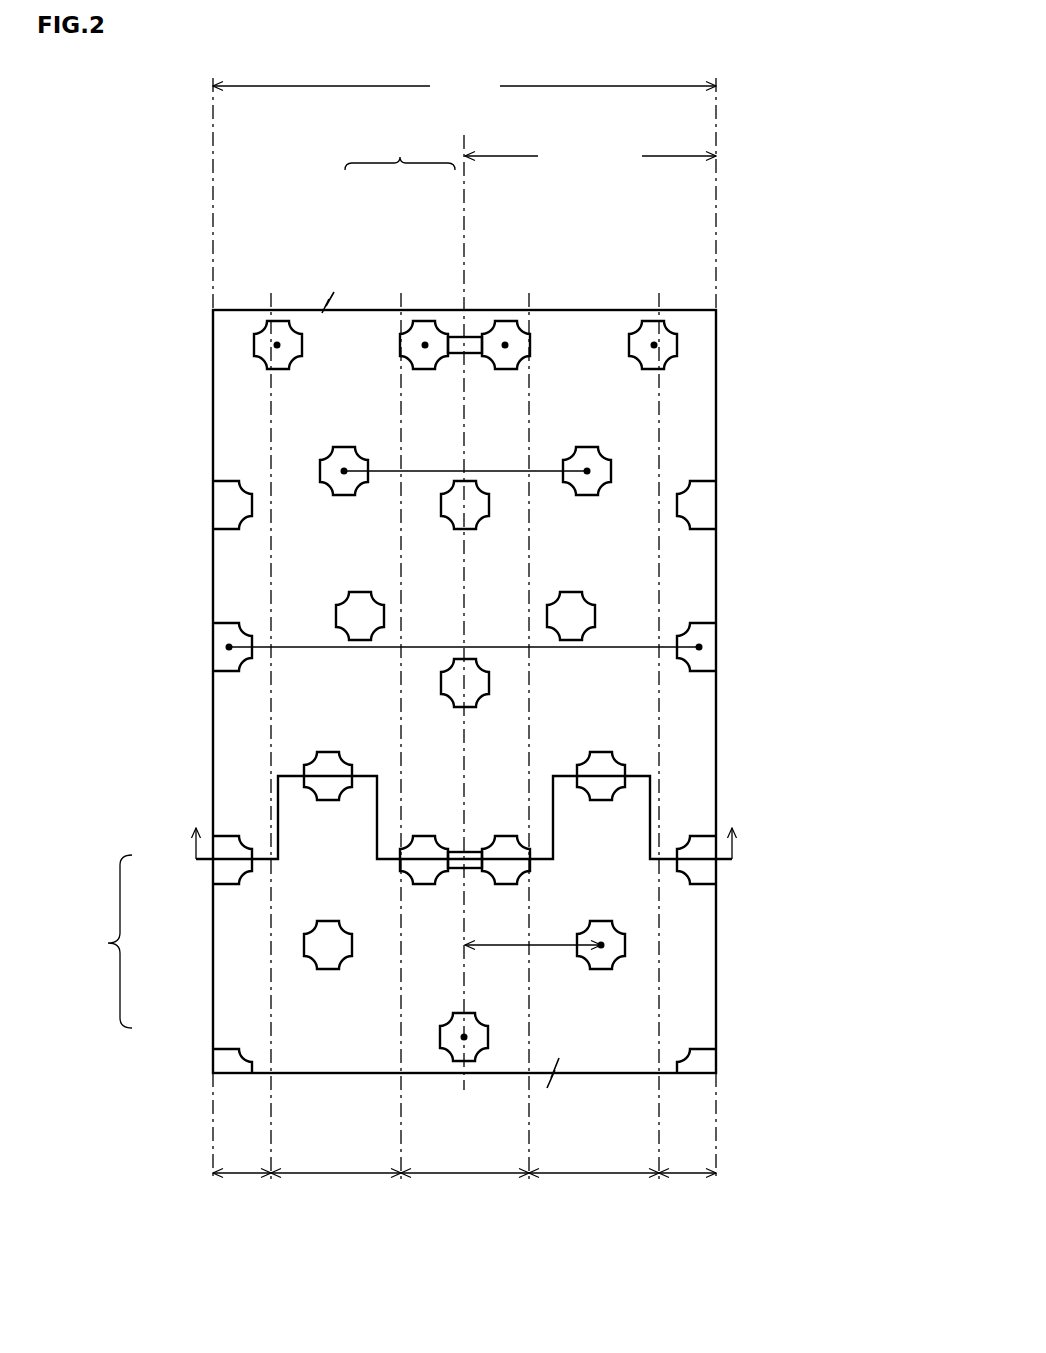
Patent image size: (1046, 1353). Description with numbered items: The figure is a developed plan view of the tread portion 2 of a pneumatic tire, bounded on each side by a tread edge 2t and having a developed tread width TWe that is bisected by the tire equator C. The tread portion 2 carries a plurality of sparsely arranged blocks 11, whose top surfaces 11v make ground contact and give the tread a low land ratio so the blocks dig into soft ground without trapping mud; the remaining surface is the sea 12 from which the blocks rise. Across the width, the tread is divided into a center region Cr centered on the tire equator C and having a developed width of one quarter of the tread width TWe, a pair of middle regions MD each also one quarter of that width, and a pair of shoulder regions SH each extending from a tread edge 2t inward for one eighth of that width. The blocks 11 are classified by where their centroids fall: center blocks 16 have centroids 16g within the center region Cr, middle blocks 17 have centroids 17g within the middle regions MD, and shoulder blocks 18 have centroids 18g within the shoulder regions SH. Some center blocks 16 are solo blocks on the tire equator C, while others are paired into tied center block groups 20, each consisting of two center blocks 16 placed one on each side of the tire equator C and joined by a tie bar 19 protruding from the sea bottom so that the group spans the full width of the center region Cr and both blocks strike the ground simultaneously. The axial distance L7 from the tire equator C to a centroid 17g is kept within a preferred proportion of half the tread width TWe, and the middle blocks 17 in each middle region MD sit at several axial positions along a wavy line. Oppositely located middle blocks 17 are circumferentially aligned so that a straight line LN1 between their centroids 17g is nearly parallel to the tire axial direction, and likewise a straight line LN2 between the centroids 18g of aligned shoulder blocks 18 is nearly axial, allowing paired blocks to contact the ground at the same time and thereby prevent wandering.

The tread portion 2 is at (600, 325).
The tread edge 2t is at (214, 1062).
The block 11 is at (732, 735).
The top surface of block 11v is at (608, 772).
The sea 12 is at (694, 573).
The center block 16 is at (327, 596).
The centroid of center block 16g is at (425, 345).
The middle block 17 is at (345, 458).
The centroid of middle block 17g is at (277, 345).
The shoulder block 18 is at (232, 500).
The centroid of shoulder block 18g is at (229, 647).
The tie bar 19 is at (465, 337).
The tied center block group 20 is at (437, 250).
The tire equator C is at (465, 599).
The developed tread width TWe is at (464, 122).
The straight line between centroids of aligned middle blocks LN1 is at (505, 471).
The straight line between centroids of aligned shoulder blocks LN2 is at (618, 647).
The axial distance from tire equator to centroid of middle block L7 is at (533, 958).
The shoulder region SH is at (462, 1190).
The middle region MD is at (465, 1190).
The center region Cr is at (465, 1190).